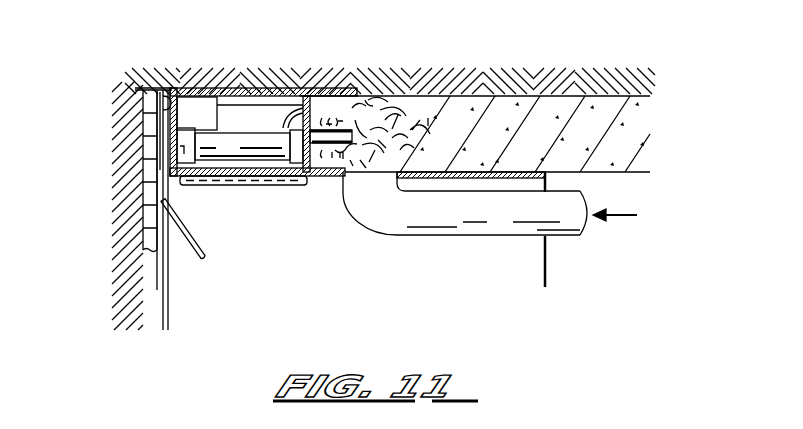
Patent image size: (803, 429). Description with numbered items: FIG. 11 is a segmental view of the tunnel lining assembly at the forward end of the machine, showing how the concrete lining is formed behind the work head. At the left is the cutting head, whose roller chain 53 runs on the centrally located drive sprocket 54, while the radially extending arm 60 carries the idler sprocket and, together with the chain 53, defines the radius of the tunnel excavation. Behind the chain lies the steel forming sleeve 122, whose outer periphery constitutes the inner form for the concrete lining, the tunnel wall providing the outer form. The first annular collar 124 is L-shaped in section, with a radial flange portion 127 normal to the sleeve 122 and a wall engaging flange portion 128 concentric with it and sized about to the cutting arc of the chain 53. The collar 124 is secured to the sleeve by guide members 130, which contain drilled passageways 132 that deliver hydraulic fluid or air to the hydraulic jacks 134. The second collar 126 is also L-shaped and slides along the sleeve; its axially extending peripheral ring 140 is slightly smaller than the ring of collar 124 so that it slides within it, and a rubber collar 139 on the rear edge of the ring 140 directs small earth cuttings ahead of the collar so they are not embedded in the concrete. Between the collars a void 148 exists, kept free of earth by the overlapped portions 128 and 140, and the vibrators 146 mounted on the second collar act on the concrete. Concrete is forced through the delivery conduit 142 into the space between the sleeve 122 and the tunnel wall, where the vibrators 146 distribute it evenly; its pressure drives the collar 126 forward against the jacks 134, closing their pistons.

The roller chain 53 is at (150, 238).
The drive sprocket 54 is at (140, 142).
The radially extending arm 60 is at (204, 246).
The steel forming sleeve 122 is at (548, 190).
The first annular collar 124 is at (243, 92).
The second collar 126 is at (266, 100).
The annular radial flange portion 127 is at (153, 84).
The wall engaging flange portion 128 is at (185, 96).
The guide member 130 is at (307, 184).
The drilled passageway 132 is at (213, 181).
The hydraulic jack 134 is at (225, 138).
The rubber collar 139 is at (335, 92).
The axially extending peripheral ring 140 is at (285, 92).
The delivery conduit 142 is at (460, 230).
The vibrator 146 is at (275, 119).
The void 148 is at (196, 102).